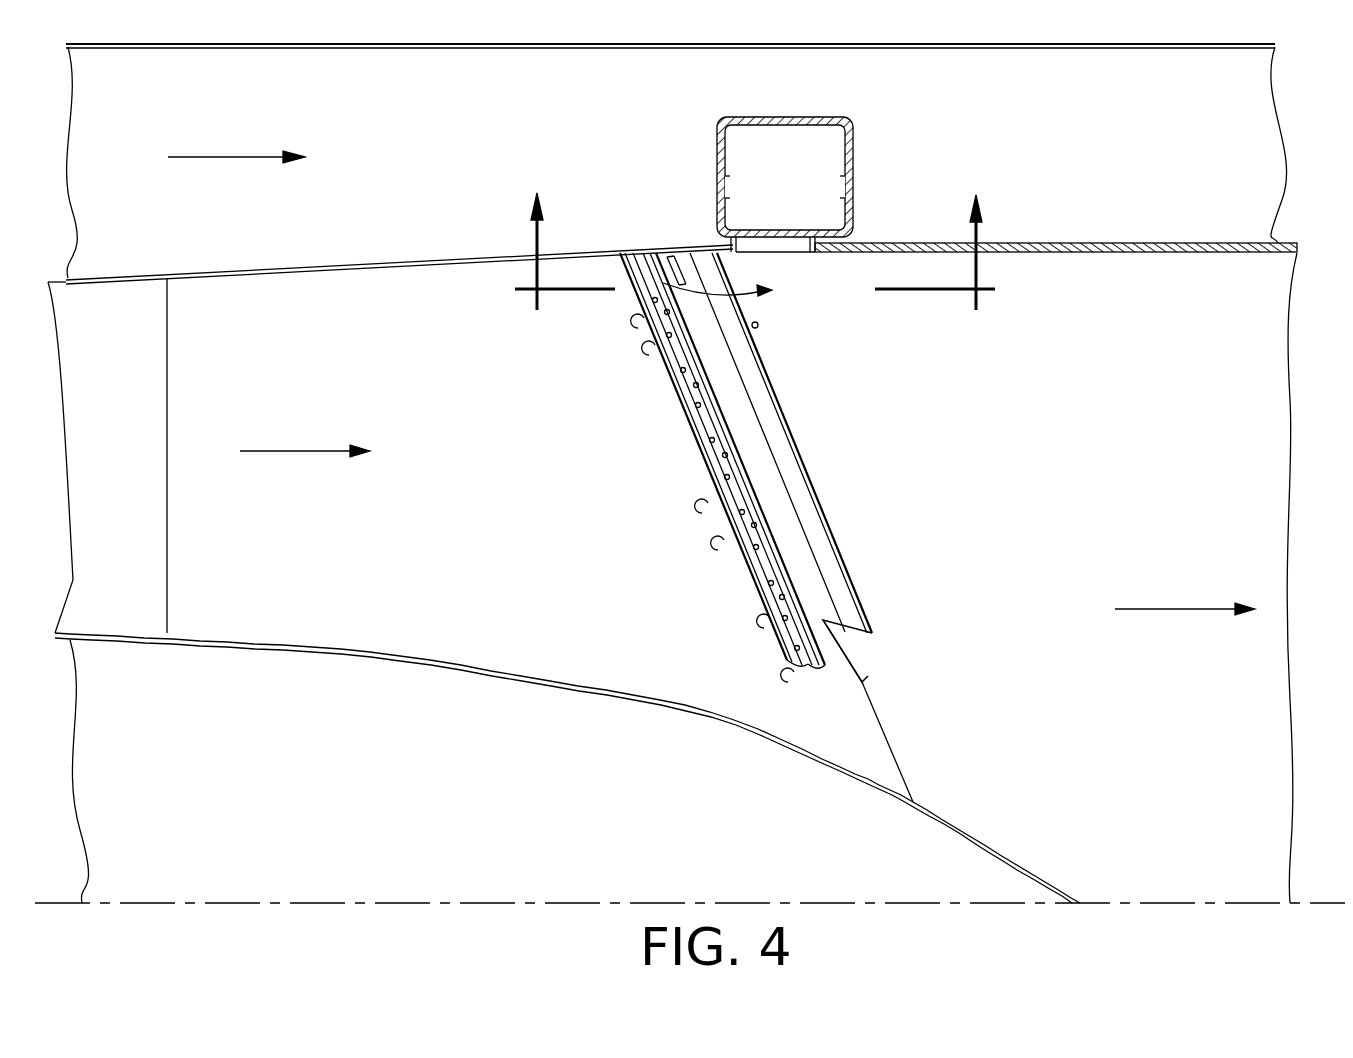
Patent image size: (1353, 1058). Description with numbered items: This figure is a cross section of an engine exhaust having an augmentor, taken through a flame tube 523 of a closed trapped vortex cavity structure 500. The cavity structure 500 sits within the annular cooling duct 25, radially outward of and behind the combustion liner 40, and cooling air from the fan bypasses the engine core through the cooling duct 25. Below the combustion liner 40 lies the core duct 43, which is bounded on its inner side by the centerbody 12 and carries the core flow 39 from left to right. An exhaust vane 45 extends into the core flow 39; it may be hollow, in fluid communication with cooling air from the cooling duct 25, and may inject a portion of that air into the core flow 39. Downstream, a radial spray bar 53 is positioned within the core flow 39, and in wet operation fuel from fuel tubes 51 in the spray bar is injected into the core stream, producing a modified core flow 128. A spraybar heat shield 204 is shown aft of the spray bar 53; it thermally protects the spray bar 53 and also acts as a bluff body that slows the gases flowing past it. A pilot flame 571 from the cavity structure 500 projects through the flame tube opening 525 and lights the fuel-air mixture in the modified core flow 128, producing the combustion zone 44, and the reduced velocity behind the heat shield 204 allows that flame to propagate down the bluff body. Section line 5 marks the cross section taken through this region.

The section line 5- 5 is at (758, 236).
The centerbody 12 is at (300, 657).
The annular cooling duct 25 is at (225, 158).
The core flow 39 is at (295, 451).
The combustion liner 40 is at (1170, 243).
The core duct 43 is at (512, 491).
The combustion zone 44 is at (1072, 488).
The exhaust vane 45 is at (167, 432).
The fuel tubes 51 is at (760, 578).
The radial spray bar 53 is at (655, 517).
The modified core flow 128 is at (1180, 609).
The spraybar heat shield 204 is at (840, 546).
The closed trapped vortex cavity structure 500 is at (852, 140).
The flame tube 523 is at (736, 250).
The flame tube opening 525 is at (780, 249).
The pilot flame 571 is at (758, 236).